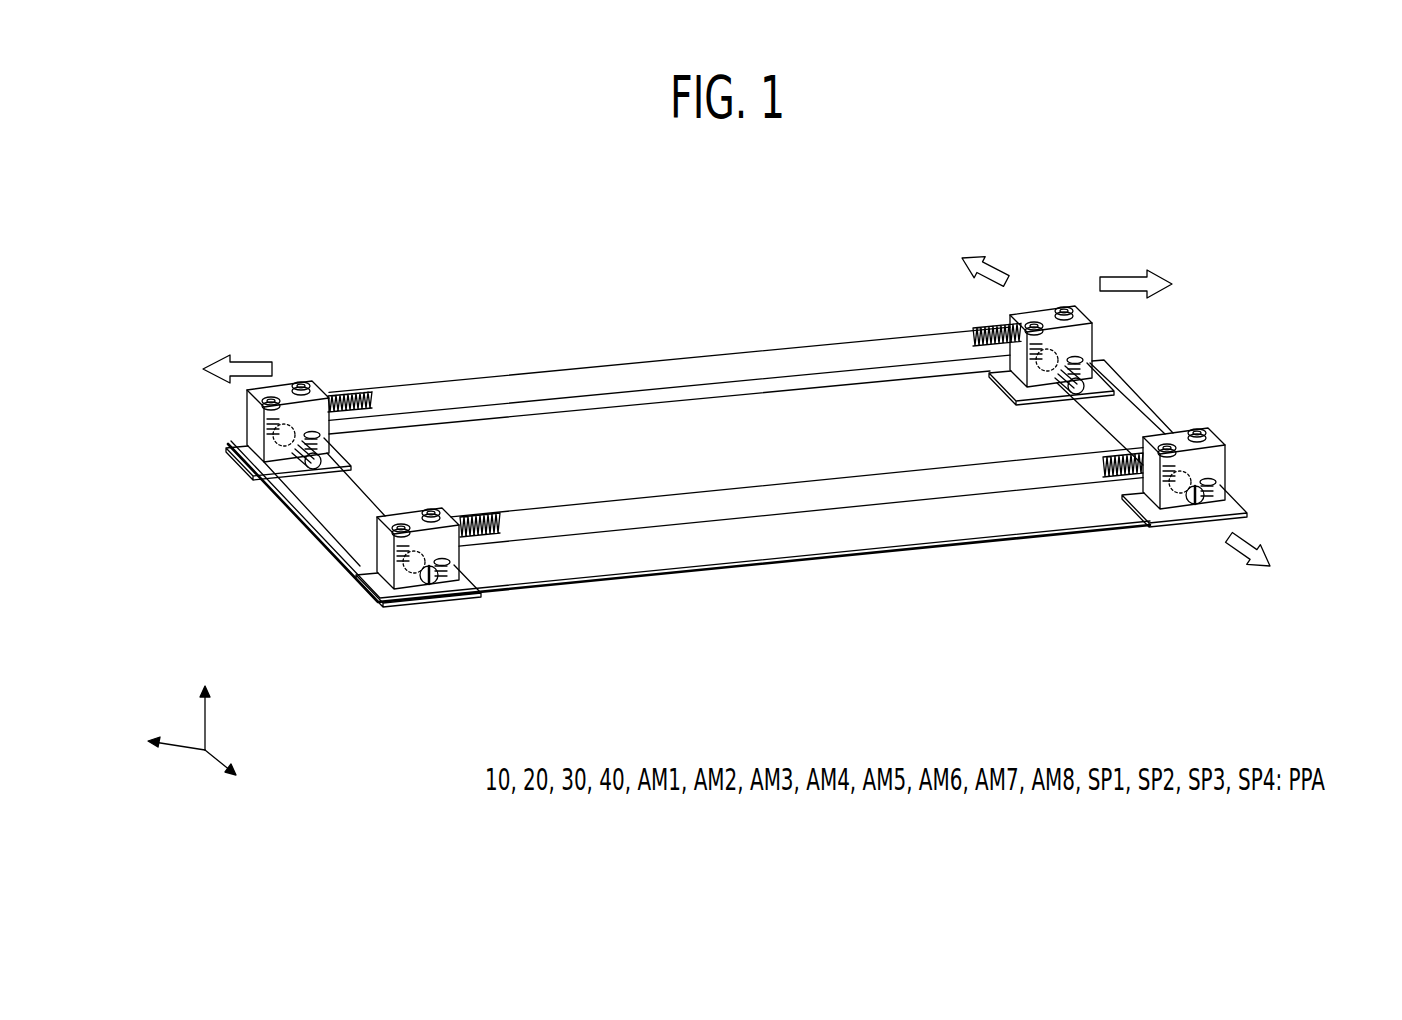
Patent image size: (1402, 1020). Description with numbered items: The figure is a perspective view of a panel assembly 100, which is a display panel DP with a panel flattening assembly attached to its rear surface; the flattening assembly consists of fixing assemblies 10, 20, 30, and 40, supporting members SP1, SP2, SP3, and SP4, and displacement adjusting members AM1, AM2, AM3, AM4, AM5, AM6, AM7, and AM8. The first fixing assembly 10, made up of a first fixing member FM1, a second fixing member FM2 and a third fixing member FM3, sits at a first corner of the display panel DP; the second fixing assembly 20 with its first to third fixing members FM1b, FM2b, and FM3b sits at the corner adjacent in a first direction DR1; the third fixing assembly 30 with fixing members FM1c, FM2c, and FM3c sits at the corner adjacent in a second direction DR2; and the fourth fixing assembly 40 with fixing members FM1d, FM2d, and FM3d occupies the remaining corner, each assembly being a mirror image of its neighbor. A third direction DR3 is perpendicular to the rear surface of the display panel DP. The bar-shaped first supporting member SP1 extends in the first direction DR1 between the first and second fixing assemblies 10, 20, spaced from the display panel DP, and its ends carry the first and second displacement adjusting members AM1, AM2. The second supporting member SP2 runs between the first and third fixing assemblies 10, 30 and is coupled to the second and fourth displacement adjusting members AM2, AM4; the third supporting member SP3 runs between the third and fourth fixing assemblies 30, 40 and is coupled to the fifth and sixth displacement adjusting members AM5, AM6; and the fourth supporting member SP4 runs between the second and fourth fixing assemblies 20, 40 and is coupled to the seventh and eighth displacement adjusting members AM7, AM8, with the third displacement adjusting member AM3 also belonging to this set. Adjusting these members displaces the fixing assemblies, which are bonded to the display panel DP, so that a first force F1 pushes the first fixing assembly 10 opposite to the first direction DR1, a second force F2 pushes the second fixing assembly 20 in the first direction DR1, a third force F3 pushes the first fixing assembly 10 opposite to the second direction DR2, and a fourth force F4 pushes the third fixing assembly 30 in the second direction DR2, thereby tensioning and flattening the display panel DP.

The panel assembly 100 is at (425, 208).
The first fixing assembly 10 is at (1198, 312).
The second fixing assembly 20 is at (1325, 425).
The third fixing assembly 30 is at (134, 420).
The fourth fixing assembly 40 is at (270, 540).
The first fixing member FM1 is at (1112, 388).
The second fixing member FM2 is at (1094, 348).
The third fixing member FM3 is at (1096, 320).
The first fixing member FM1b is at (1236, 497).
The second fixing member FM2b is at (1226, 470).
The third fixing member FM3b is at (1212, 428).
The first fixing member FM1c is at (240, 462).
The second fixing member FM2c is at (262, 435).
The third fixing member FM3c is at (247, 400).
The first fixing member FM1d is at (372, 580).
The second fixing member FM2d is at (383, 548).
The third fixing member FM3d is at (376, 522).
The first displacement adjusting member AM1 is at (1052, 386).
The second displacement adjusting member AM2 is at (985, 328).
The third displacement adjusting member AM3 is at (1196, 498).
The fourth displacement adjusting member AM4 is at (360, 396).
The fifth displacement adjusting member AM5 is at (322, 446).
The sixth displacement adjusting member AM6 is at (433, 580).
The seventh displacement adjusting member AM7 is at (1105, 470).
The eighth displacement adjusting member AM8 is at (492, 518).
The first supporting member SP1 is at (1122, 418).
The second supporting member SP2 is at (742, 354).
The third supporting member SP3 is at (330, 486).
The fourth supporting member SP4 is at (848, 495).
The display panel DP is at (938, 548).
The first force F1 is at (980, 254).
The second force F2 is at (1258, 571).
The third force F3 is at (1153, 284).
The fourth force F4 is at (222, 375).
The first direction DR1 is at (236, 778).
The second direction DR2 is at (155, 747).
The third direction DR3 is at (204, 700).